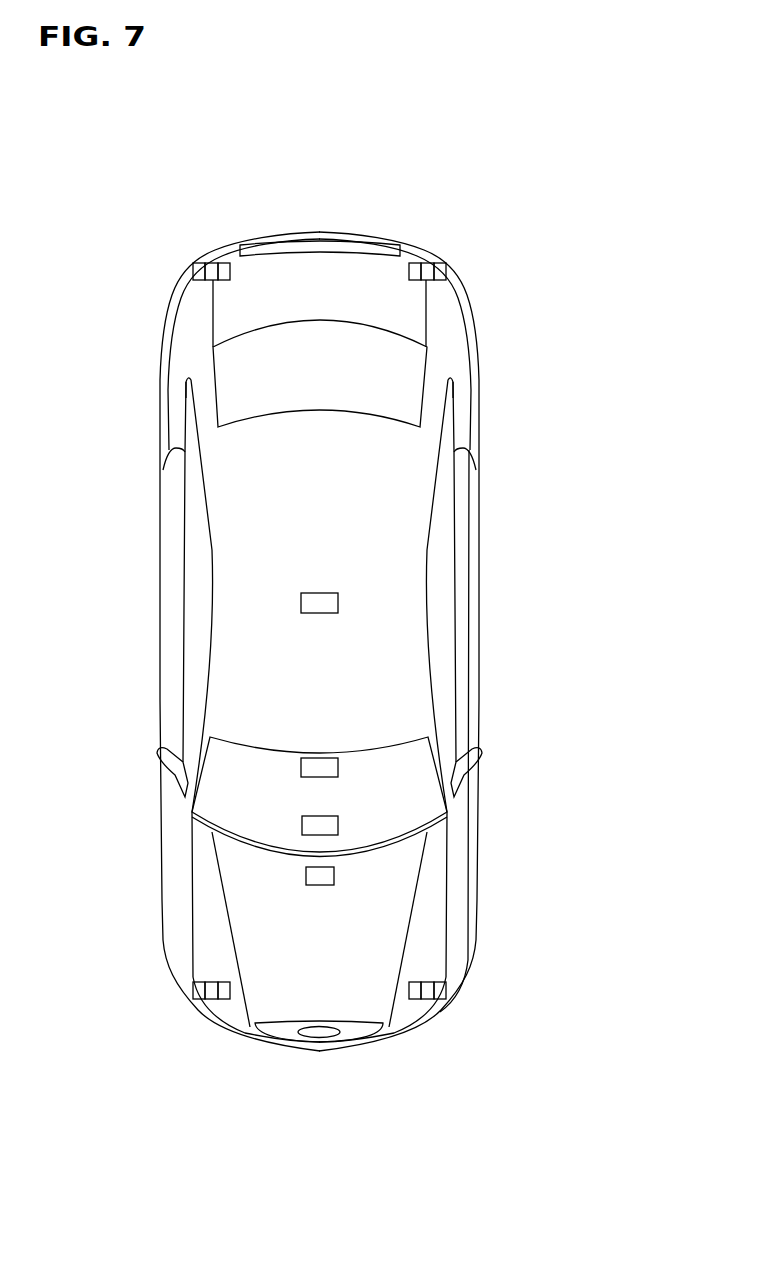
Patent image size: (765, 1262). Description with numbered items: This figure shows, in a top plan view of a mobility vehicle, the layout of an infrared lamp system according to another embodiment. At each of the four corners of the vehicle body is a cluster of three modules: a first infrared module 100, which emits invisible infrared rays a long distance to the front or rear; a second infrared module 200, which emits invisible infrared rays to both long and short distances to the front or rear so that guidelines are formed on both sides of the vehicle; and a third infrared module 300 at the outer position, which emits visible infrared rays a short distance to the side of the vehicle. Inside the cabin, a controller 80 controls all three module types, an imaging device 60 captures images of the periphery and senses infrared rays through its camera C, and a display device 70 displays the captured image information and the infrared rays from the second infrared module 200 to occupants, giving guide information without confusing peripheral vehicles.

The first infrared module 100 is at (225, 268).
The second infrared module 200 is at (211, 268).
The third infrared module 300 is at (198, 272).
The controller 80 is at (333, 602).
The imaging device 60 is at (330, 765).
The display device 70 is at (308, 825).
The camera C is at (330, 876).